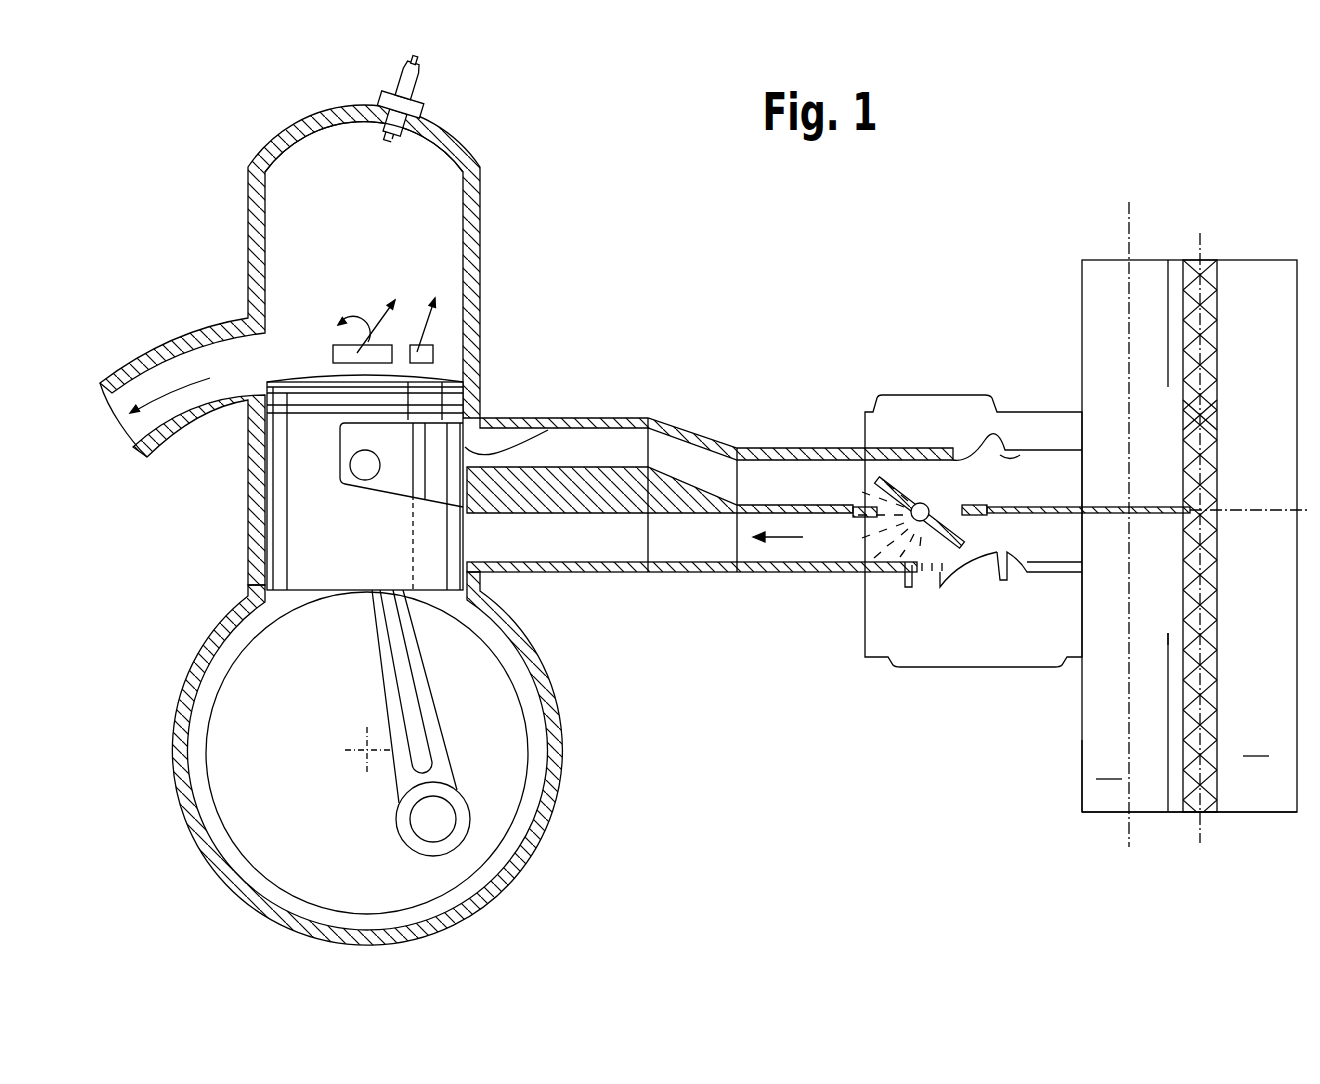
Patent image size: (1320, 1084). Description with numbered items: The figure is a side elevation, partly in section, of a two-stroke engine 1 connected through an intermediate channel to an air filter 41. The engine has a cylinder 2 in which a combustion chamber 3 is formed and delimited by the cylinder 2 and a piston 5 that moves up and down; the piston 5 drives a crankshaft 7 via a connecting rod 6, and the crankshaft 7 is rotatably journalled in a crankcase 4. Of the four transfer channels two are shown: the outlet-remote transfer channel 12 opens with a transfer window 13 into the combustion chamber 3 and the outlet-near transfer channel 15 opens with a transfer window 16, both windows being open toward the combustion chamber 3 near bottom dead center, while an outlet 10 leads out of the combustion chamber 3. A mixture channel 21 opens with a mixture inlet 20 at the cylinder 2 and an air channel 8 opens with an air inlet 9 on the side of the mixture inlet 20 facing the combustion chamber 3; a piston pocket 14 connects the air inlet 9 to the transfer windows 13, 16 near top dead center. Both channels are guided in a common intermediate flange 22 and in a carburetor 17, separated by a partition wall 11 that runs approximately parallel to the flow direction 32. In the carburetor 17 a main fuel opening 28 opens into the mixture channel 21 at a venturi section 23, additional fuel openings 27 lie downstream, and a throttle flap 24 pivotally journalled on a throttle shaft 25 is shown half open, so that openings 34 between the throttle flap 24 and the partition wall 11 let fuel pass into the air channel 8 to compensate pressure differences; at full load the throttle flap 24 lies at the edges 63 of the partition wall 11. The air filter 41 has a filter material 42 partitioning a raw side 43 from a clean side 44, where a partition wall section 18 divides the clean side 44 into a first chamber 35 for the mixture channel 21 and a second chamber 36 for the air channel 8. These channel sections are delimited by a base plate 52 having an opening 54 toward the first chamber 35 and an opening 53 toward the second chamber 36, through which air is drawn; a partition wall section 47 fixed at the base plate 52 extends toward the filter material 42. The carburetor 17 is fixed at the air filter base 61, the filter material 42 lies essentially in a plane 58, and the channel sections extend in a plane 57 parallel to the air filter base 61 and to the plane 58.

The two-stroke engine 1 is at (178, 262).
The cylinder 2 is at (253, 197).
The combustion chamber 3 is at (438, 207).
The crankcase 4 is at (530, 833).
The piston 5 is at (323, 482).
The connecting rod 6 is at (425, 700).
The crankshaft 7 is at (363, 755).
The air channel 8 is at (547, 420).
The air inlet 9 is at (493, 423).
The outlet 10 is at (143, 425).
The partition wall 11 is at (777, 503).
The outlet-remote transfer channel 12 is at (427, 353).
The transfer window 13 is at (433, 347).
The piston pocket 14 is at (410, 477).
The outlet-near transfer channel 15 is at (332, 353).
The transfer window 16 is at (335, 340).
The carburetor 17 is at (910, 637).
The partition wall section 18 is at (1107, 518).
The mixture inlet 20 is at (470, 537).
The mixture channel 21 is at (635, 547).
The intermediate flange 22 is at (805, 445).
The venturi section 23 is at (1000, 455).
The throttle flap 24 is at (913, 470).
The throttle shaft 25 is at (925, 500).
The fuel openings 27 is at (930, 583).
The main fuel opening 28 is at (1003, 580).
The flow direction 32 is at (775, 543).
The openings 34 is at (975, 470).
The first chamber 35 is at (1098, 800).
The second chamber 36 is at (1111, 275).
The air filter 41 is at (1198, 240).
The filter material 42 is at (1210, 300).
The raw side 43 is at (1256, 742).
The clean side 44 is at (1109, 765).
The partition wall section 47 is at (1166, 516).
The base plate 52 is at (1165, 782).
The opening 53 is at (1167, 397).
The opening 54 is at (1167, 620).
The plane 57 is at (1129, 847).
The plane 58 is at (1198, 842).
The air filter base 61 is at (1083, 767).
The edges 63 is at (977, 503).